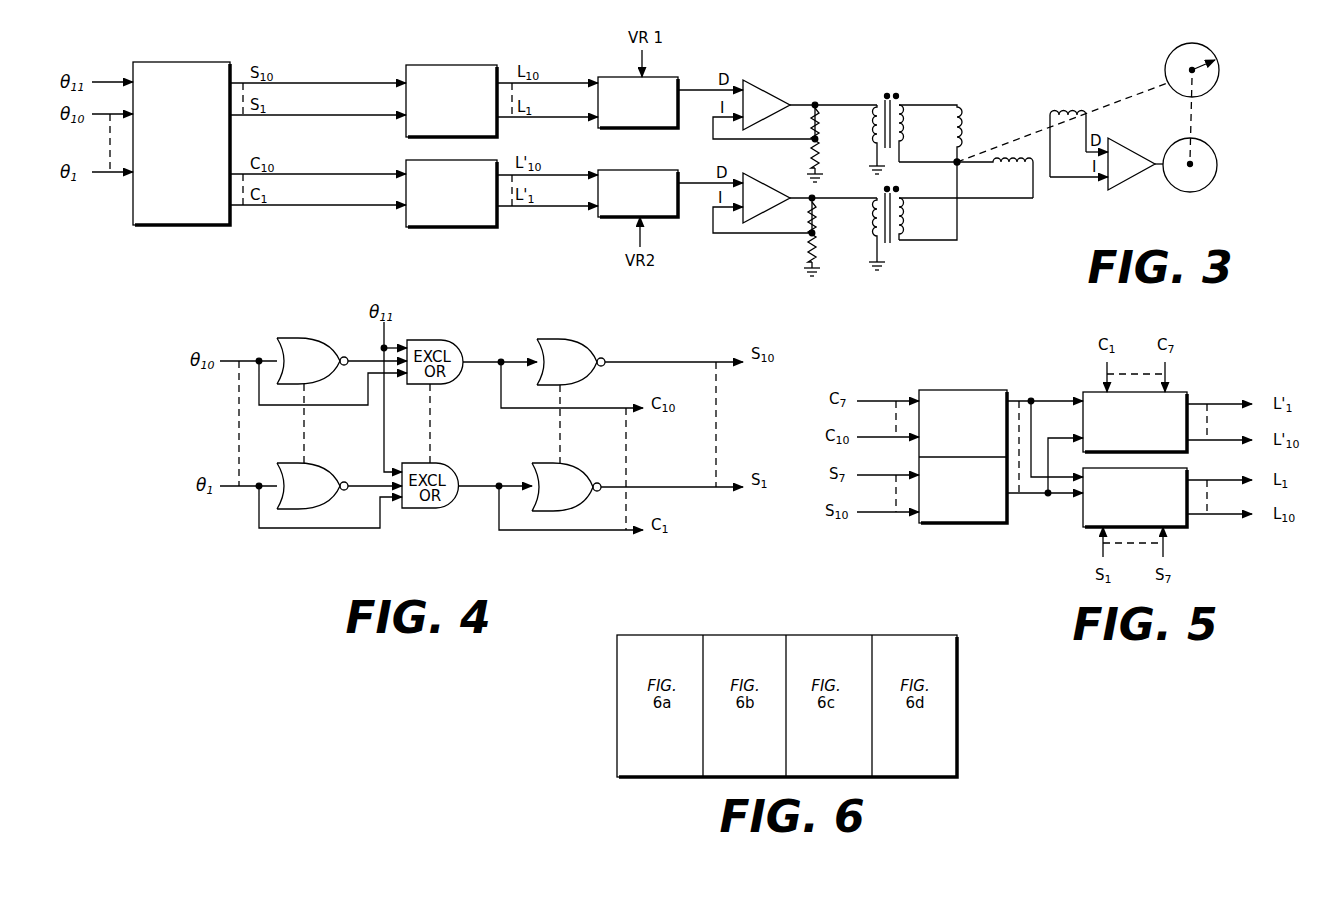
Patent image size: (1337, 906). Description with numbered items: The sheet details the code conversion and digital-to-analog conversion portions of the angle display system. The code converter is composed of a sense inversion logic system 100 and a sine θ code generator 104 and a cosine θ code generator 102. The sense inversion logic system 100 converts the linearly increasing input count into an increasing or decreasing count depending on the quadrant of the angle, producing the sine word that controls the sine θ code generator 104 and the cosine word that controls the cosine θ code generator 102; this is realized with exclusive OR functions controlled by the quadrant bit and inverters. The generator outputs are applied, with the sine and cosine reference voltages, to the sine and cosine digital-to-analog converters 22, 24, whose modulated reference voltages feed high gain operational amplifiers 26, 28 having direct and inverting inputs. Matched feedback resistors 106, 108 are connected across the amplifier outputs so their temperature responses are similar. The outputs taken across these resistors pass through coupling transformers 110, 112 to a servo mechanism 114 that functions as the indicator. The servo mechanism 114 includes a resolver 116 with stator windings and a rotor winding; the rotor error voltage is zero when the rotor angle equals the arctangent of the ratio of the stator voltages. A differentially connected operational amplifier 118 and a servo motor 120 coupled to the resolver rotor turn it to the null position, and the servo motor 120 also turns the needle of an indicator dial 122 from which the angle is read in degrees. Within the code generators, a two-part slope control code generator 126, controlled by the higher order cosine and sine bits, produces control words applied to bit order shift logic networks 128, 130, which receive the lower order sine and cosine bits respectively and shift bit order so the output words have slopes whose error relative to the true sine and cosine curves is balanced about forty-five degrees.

In FIG. 3, the sense inversion logic system 100 is at (172, 62).
In FIG. 3, the sine θ code generator 104 is at (440, 65).
In FIG. 3, the cosine θ code generator 102 is at (438, 227).
In FIG. 3, the sine digital-to-analog converter 22 is at (628, 128).
In FIG. 3, the cosine digital-to-analog converter 24 is at (650, 170).
In FIG. 3, the amplifier 26 is at (780, 77).
In FIG. 3, the amplifier 28 is at (778, 170).
In FIG. 3, the feedback resistor 106 is at (822, 118).
In FIG. 3, the feedback resistor 108 is at (819, 212).
In FIG. 3, the coupling transformer 110 is at (899, 100).
In FIG. 3, the coupling transformer 112 is at (899, 193).
In FIG. 3, the servo mechanism 114 is at (1012, 113).
In FIG. 3, the resolver 116 is at (1020, 172).
In FIG. 3, the differentially connected operational amplifier 118 is at (1118, 190).
In FIG. 3, the servo motor 120 is at (1210, 185).
In FIG. 3, the indicator dial 122 is at (1212, 48).
In FIG. 5, the slope control code generator 126 is at (953, 523).
In FIG. 5, the bit order shift logic network 128 is at (1178, 527).
In FIG. 5, the cosine bit order shift logic network 130 is at (1178, 392).